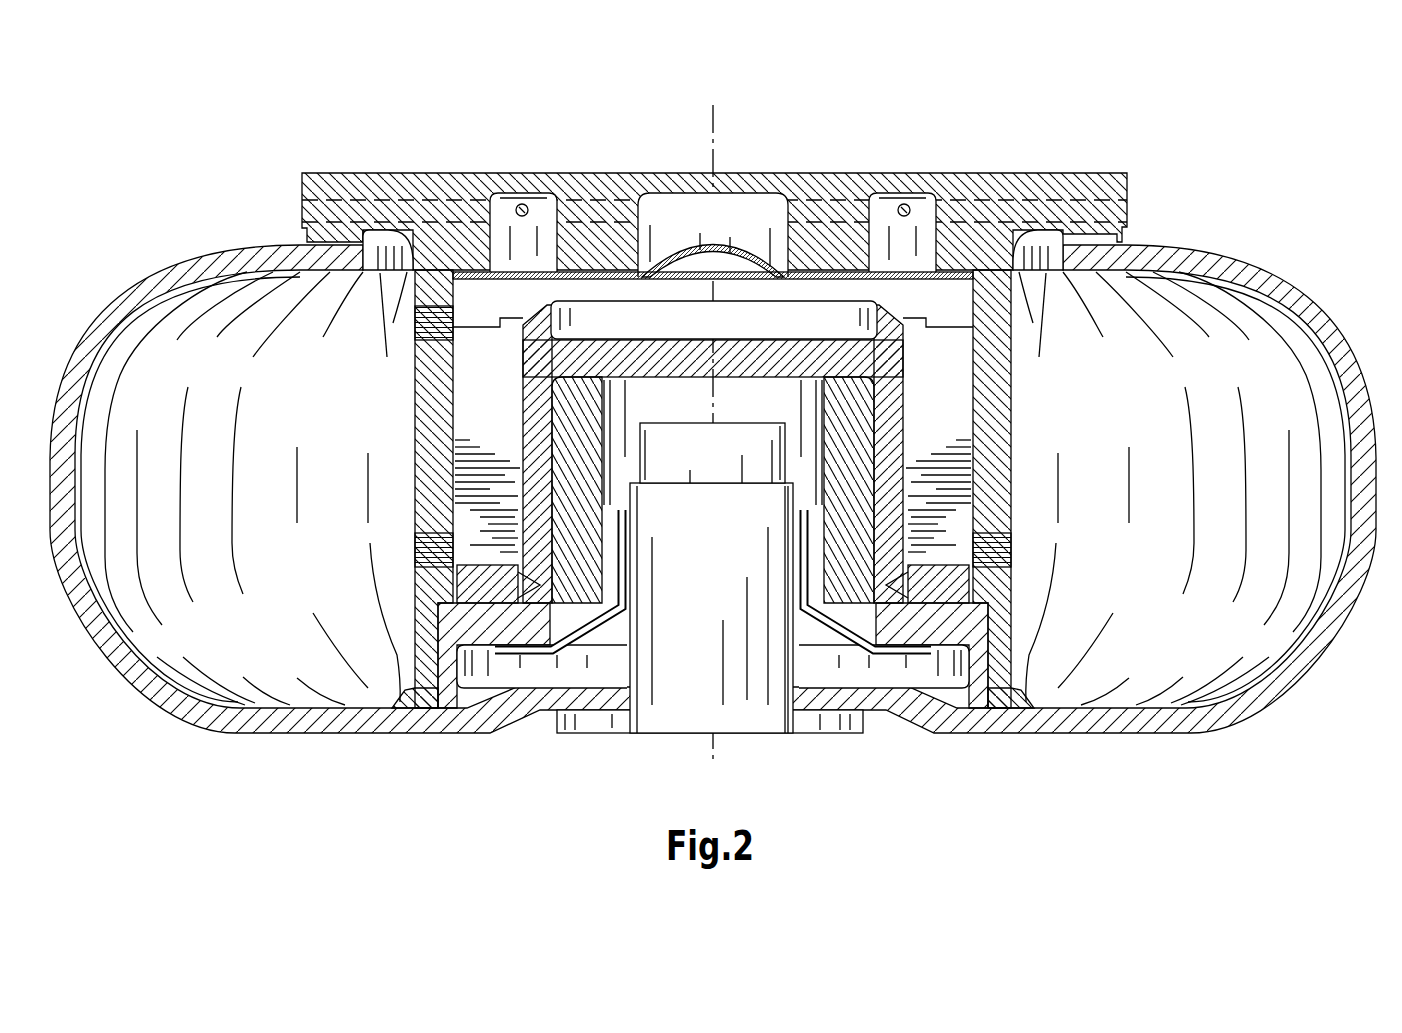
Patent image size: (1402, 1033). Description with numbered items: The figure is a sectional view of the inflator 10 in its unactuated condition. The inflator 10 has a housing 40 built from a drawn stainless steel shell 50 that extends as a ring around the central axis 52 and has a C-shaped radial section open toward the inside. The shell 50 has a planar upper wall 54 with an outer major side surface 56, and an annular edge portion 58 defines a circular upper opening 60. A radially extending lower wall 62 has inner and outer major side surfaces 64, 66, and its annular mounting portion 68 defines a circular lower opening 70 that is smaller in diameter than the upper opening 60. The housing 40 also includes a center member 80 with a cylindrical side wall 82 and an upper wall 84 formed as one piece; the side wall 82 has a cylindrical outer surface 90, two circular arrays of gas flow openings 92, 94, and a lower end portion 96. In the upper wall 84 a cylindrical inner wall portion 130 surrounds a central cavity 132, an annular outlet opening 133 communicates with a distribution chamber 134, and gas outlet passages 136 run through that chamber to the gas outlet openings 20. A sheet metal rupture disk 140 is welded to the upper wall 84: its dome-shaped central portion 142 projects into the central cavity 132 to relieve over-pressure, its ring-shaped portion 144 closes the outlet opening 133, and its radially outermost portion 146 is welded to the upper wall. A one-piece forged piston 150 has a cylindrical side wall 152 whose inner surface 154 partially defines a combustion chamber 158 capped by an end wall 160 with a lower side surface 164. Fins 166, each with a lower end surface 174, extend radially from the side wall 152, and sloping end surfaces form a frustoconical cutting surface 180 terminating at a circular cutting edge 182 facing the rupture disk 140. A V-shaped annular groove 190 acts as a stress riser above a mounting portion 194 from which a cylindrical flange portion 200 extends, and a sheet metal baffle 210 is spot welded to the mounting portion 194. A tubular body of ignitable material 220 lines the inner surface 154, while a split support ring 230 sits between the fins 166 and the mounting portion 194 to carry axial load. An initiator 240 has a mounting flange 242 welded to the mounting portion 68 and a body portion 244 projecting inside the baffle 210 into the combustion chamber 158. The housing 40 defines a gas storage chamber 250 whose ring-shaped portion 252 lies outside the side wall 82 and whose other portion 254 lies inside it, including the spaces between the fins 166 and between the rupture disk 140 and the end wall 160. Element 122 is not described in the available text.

The inflator 10 is at (1203, 102).
The gas outlet openings 20 is at (300, 214).
The housing 40 is at (1272, 214).
The shell 50 is at (1318, 300).
The central axis 52 is at (112, 334).
The upper wall 54 is at (1118, 272).
The outer major side surface 56 is at (1156, 256).
The annular edge portion 58 is at (1075, 282).
The upper opening 60 is at (1026, 282).
The lower wall 62 is at (1112, 722).
The inner major side surface 64 is at (1077, 702).
The outer major side surface 66 is at (1083, 722).
The mounting portion 68 is at (860, 700).
The lower opening 70 is at (635, 700).
The center member 80 is at (302, 172).
The side wall 82 is at (412, 416).
The upper wall 84 is at (423, 172).
The outer surface 90 is at (435, 462).
The gas flow openings 92 is at (435, 322).
The gas flow openings 94 is at (415, 546).
The lower end portion 96 is at (420, 656).
The top plate edge 122 is at (1098, 212).
The inner wall portion 130 is at (833, 237).
The central cavity 132 is at (781, 244).
The outlet opening 133 is at (1000, 242).
The distribution chamber 134 is at (528, 253).
The gas outlet passages 136 is at (538, 207).
The rupture disk 140 is at (817, 281).
The central dome-shaped portion 142 is at (700, 243).
The ring-shaped portion 144 is at (905, 282).
The radially outermost portion 146 is at (475, 300).
The piston 150 is at (905, 470).
The side wall 152 is at (540, 496).
The inner surface 154 is at (555, 540).
The combustion chamber 158 is at (713, 397).
The end wall 160 is at (820, 360).
The lower side surface 164 is at (728, 378).
The fins 166 is at (470, 392).
The lower end surface 174 is at (937, 568).
The cutting surface 180 is at (886, 303).
The cutting edge 182 is at (580, 300).
The annular groove 190 is at (898, 592).
The mounting portion 194 is at (945, 614).
The flange portion 200 is at (975, 664).
The baffle 210 is at (818, 648).
The body of ignitable material 220 is at (606, 508).
The support ring 230 is at (470, 576).
The initiator 240 is at (736, 421).
The mounting flange 242 is at (600, 736).
The body portion 244 is at (710, 608).
The gas storage chamber 250 is at (1110, 499).
The ring-shaped portion 252 is at (1145, 445).
The storage chamber portion 254 is at (700, 290).